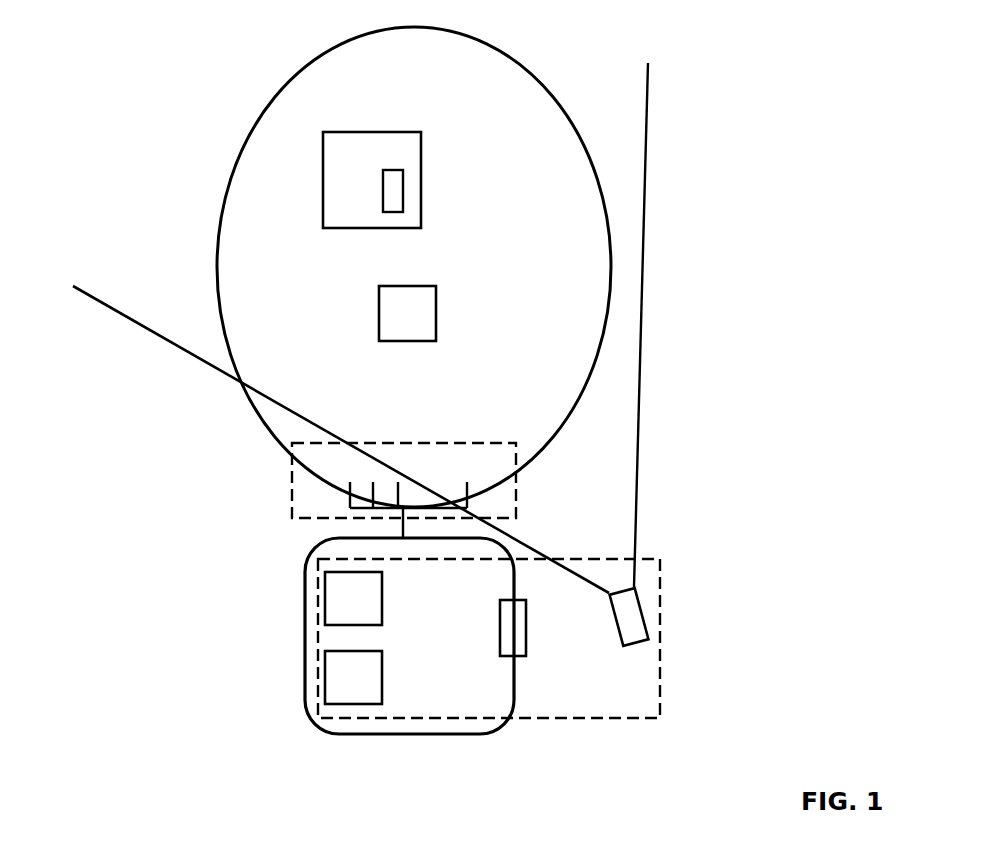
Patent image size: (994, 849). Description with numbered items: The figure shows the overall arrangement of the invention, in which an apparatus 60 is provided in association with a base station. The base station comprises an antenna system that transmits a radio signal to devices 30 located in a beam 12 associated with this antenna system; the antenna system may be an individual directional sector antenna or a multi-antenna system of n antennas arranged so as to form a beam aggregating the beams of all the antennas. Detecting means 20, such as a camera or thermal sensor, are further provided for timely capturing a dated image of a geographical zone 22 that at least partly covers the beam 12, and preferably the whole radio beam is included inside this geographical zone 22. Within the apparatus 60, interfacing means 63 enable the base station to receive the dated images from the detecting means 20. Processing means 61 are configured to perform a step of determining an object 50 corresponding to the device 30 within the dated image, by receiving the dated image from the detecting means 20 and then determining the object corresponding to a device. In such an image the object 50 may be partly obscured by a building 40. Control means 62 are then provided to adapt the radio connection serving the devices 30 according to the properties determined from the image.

The beam 12 is at (515, 427).
The detecting means 20 is at (635, 620).
The geographical zone 22 is at (626, 369).
The device 30 is at (400, 188).
The building 40 is at (421, 310).
The object 50 is at (407, 146).
The apparatus 60 is at (655, 712).
The processing means 61 is at (347, 673).
The control means 62 is at (351, 586).
The interfacing means 63 is at (507, 633).